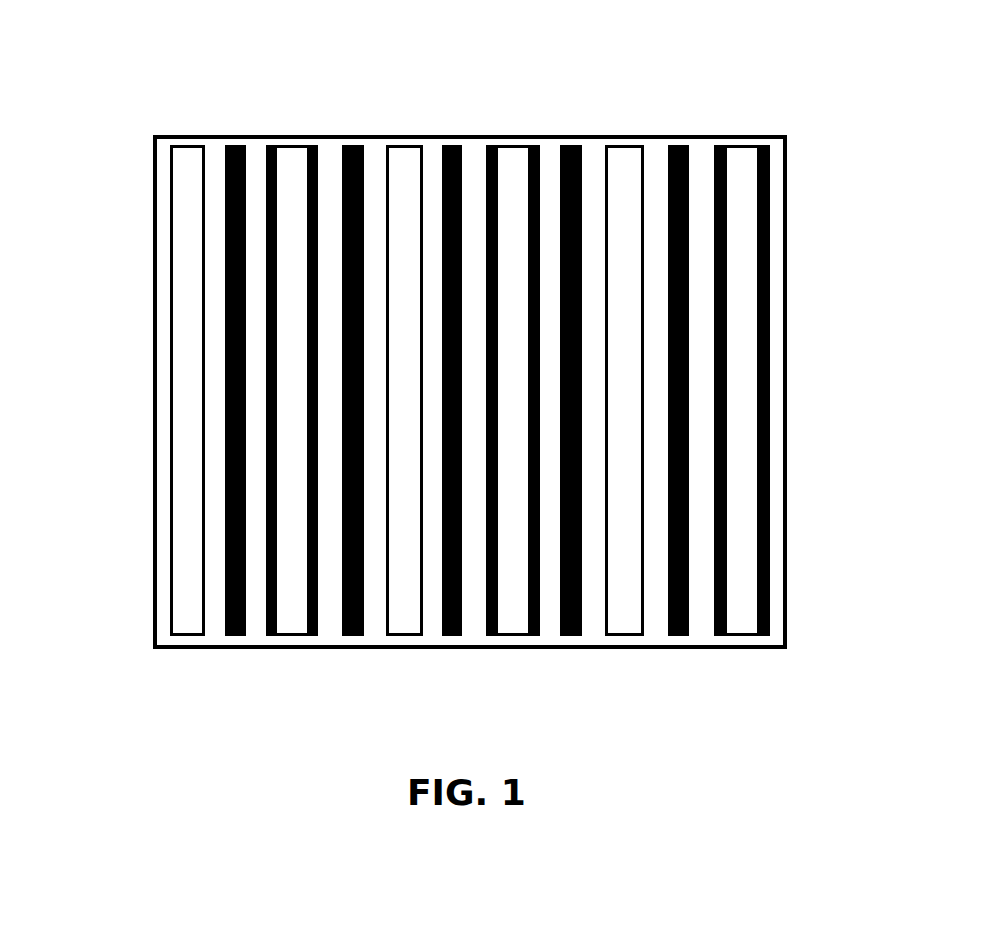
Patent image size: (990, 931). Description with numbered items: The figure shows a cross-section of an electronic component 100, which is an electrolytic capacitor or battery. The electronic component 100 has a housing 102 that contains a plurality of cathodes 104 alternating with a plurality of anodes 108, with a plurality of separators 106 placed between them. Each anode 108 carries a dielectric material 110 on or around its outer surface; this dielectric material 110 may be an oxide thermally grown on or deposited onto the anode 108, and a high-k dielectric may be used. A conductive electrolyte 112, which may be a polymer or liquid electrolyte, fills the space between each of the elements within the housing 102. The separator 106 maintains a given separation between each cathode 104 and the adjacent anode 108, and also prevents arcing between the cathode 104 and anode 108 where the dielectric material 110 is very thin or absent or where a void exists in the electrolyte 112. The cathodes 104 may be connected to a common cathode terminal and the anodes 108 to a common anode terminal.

The electronic component 100 is at (507, 38).
The housing 102 is at (786, 163).
The cathode 104 is at (182, 637).
The separator 106 is at (238, 637).
The anode 108 is at (293, 637).
The dielectric material 110 is at (267, 145).
The conductive electrolyte 112 is at (660, 150).